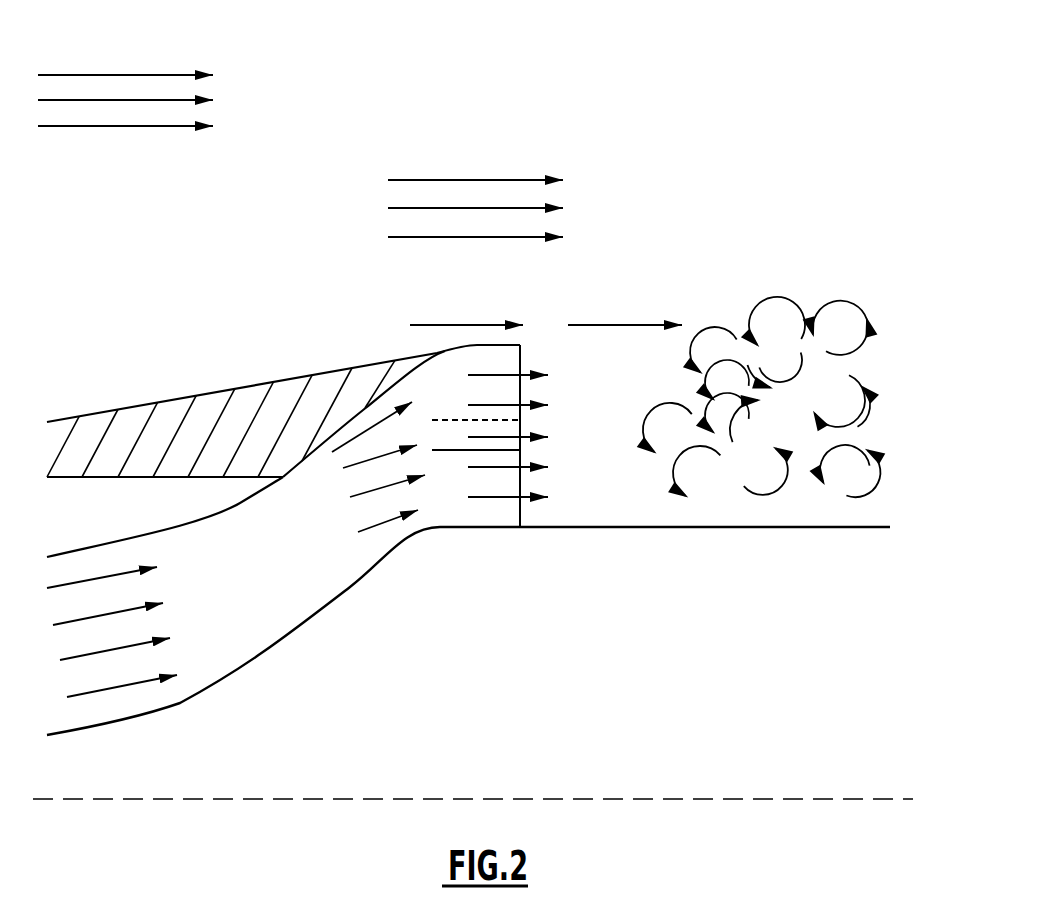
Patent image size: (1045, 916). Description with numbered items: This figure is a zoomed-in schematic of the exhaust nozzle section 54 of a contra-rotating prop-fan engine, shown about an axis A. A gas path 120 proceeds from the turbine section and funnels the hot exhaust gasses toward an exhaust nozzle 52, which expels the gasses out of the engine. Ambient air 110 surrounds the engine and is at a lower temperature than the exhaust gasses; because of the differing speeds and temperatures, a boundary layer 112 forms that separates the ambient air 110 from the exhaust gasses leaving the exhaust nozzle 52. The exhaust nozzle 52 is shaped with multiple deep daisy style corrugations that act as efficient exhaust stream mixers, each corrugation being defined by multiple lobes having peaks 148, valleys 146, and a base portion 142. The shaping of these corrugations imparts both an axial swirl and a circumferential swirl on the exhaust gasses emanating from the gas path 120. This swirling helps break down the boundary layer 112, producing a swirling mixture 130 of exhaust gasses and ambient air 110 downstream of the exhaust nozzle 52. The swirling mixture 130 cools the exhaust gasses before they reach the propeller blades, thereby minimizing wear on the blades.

The ambient air 110 is at (157, 75).
The exhaust nozzle section 54 is at (349, 315).
The peaks 148 is at (488, 348).
The exhaust nozzle 52 is at (525, 348).
The boundary layer 112 is at (643, 325).
The swirling mixture 130 is at (773, 333).
The valleys 146 is at (500, 420).
The base portion 142 is at (492, 520).
The gas path 120 is at (307, 593).
The axis A is at (491, 799).